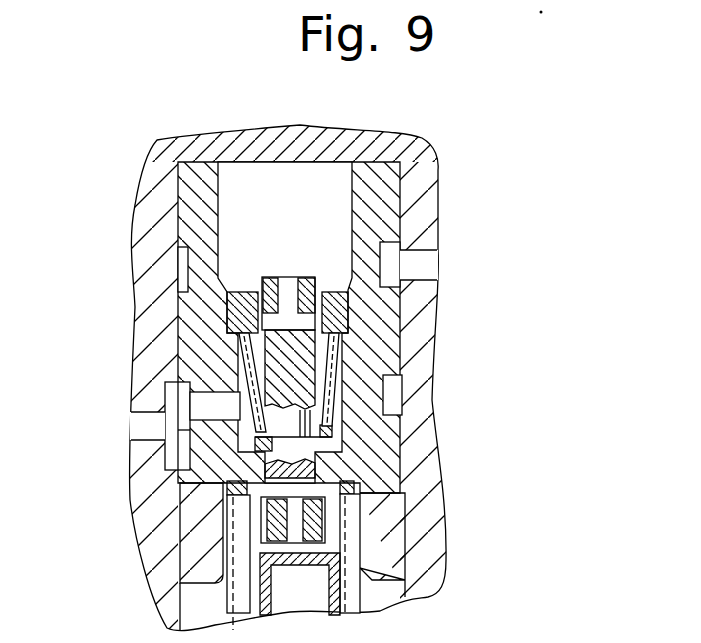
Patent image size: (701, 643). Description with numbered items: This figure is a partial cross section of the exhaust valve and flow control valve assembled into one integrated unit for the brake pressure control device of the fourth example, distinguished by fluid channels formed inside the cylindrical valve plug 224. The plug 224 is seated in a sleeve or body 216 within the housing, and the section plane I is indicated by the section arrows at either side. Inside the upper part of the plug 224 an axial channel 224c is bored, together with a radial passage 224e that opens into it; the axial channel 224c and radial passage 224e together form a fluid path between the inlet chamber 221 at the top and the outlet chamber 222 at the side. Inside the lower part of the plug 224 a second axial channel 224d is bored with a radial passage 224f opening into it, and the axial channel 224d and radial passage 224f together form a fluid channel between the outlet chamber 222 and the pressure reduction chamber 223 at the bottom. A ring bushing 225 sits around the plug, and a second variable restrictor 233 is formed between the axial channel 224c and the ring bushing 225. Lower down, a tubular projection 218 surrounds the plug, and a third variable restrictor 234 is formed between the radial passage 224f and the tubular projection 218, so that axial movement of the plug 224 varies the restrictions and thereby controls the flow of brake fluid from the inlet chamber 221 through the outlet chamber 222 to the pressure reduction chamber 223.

The valve housing 216 is at (200, 173).
The inlet chamber 221 is at (233, 210).
The ring bushing 225 is at (178, 270).
The second variable restrictor 233 is at (222, 318).
The outlet chamber 222 is at (248, 425).
The third variable restrictor 234 is at (255, 488).
The pressure reduction chamber 223 is at (152, 583).
The axial channel 224c is at (292, 280).
The radial passage 224e is at (305, 360).
The valve plug 224 is at (402, 376).
The tubular projection 218 is at (332, 441).
The radial passage 224f is at (290, 488).
The axial channel 224d is at (295, 522).
The section line I- I is at (441, 262).